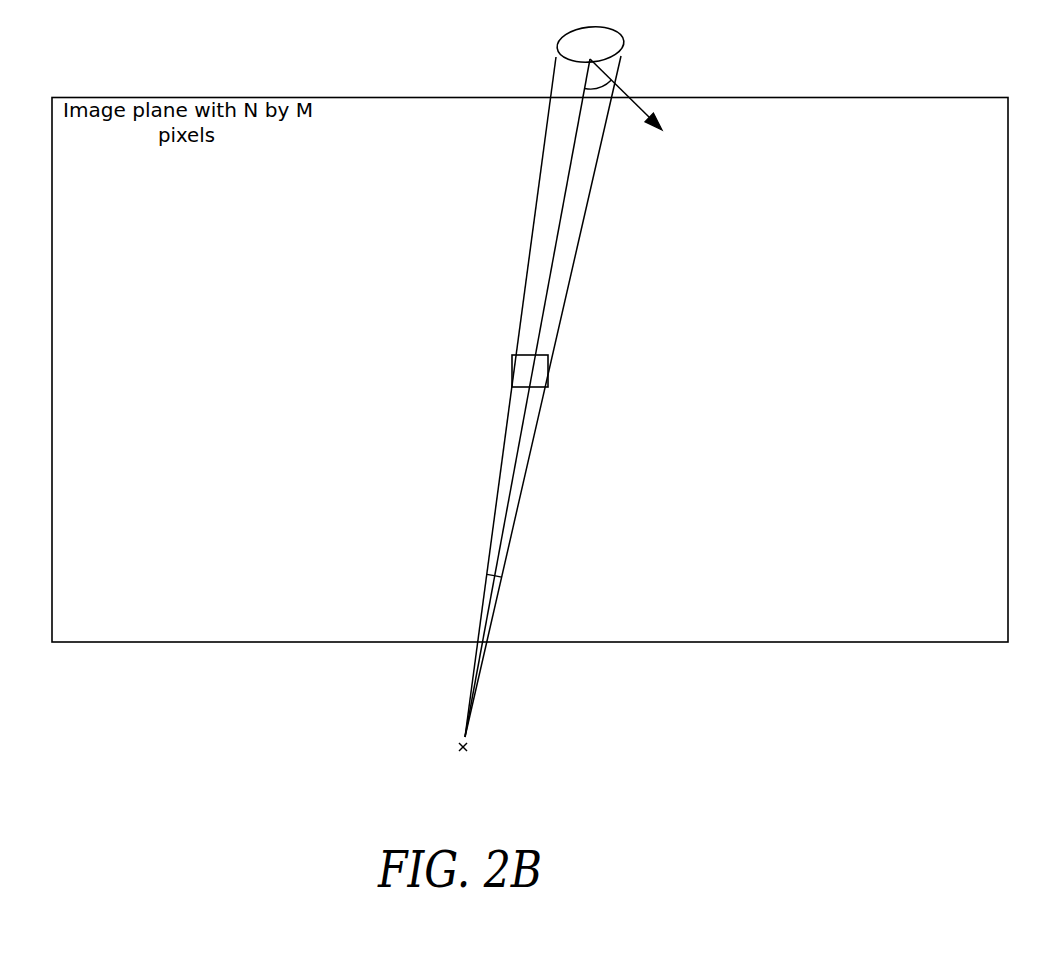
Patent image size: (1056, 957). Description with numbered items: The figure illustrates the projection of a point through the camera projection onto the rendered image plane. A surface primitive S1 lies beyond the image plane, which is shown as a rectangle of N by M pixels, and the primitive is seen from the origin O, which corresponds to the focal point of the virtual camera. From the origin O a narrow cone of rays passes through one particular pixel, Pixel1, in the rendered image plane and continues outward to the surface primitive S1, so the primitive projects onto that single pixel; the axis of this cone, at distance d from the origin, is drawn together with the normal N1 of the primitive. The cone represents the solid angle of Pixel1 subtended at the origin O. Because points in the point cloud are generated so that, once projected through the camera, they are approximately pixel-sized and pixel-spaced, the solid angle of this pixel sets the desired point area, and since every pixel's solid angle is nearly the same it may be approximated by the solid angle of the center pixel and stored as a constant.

The surface primitive S1 is at (612, 45).
The surface normal vector at S1 N1 is at (641, 101).
The distance from S1 to viewpoint O d is at (527, 398).
The pixel Pixel1 is at (561, 371).
The origin O is at (463, 770).